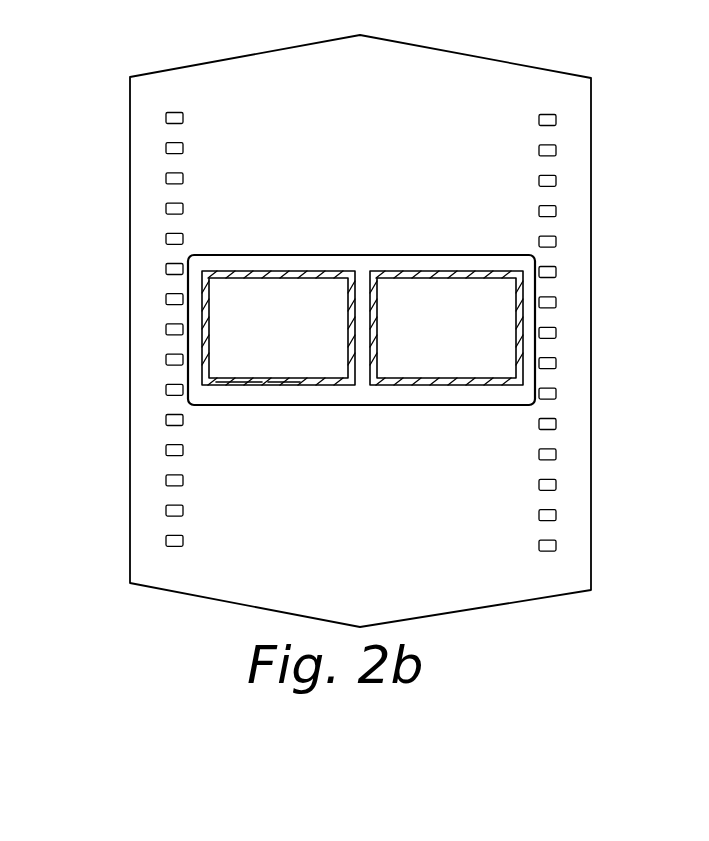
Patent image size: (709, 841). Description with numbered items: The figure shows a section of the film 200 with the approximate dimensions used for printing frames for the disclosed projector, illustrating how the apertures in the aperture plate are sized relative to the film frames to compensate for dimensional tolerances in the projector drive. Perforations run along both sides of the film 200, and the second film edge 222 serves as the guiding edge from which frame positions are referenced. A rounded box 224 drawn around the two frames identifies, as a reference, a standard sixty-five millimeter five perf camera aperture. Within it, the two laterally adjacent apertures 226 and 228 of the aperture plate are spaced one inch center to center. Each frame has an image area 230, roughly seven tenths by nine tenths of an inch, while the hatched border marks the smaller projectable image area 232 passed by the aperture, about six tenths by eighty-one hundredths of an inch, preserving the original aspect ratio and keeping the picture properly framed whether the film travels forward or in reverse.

The film 200 is at (460, 67).
The second film edge 222 is at (591, 396).
The box 224 is at (190, 402).
The aperture 226 is at (223, 292).
The aperture 228 is at (500, 330).
The image area 230 is at (240, 385).
The projectable image area 232 is at (281, 386).